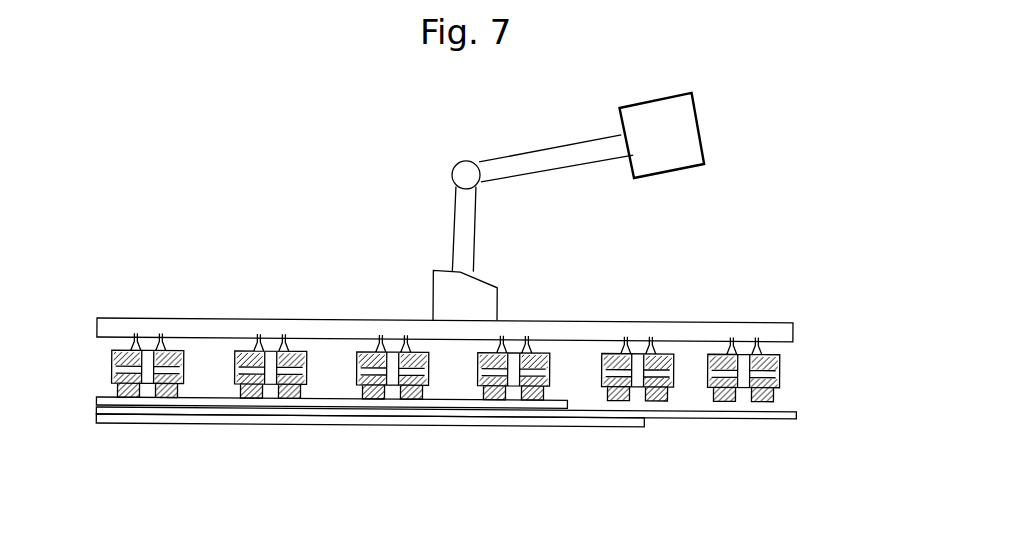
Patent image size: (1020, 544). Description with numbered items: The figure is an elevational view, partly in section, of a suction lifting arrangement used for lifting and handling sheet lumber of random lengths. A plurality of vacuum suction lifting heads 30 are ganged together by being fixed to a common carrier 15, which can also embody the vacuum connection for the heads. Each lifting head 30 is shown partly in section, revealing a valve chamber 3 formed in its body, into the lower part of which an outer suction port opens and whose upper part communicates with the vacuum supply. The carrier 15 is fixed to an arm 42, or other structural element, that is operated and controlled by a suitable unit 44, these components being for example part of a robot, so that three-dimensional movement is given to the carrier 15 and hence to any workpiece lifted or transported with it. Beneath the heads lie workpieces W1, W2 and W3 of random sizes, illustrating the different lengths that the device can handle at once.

The valve chamber 3 is at (112, 365).
The carrier 15 is at (795, 323).
The lifting head 30 is at (238, 368).
The arm 42 is at (525, 155).
The unit 44 is at (662, 135).
The workpiece W1 is at (97, 398).
The workpiece W2 is at (97, 420).
The workpiece W3 is at (107, 424).